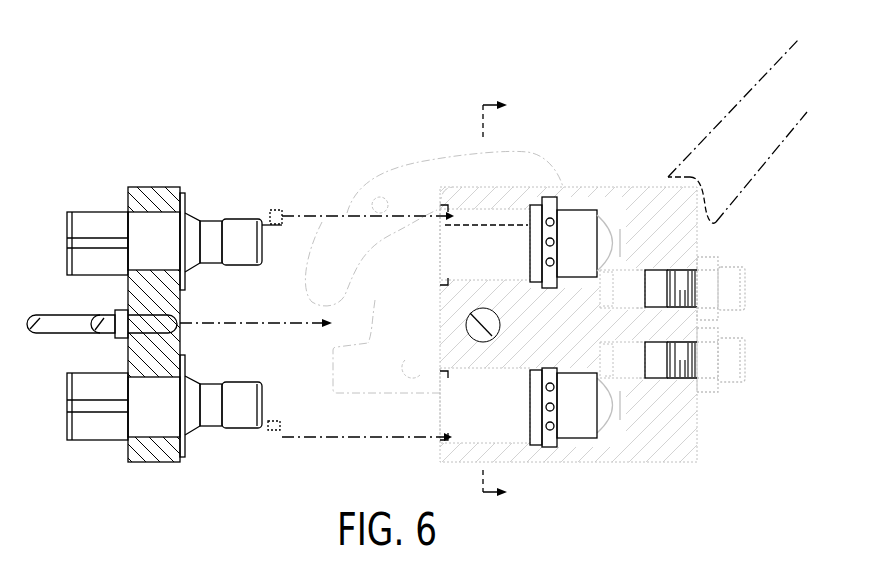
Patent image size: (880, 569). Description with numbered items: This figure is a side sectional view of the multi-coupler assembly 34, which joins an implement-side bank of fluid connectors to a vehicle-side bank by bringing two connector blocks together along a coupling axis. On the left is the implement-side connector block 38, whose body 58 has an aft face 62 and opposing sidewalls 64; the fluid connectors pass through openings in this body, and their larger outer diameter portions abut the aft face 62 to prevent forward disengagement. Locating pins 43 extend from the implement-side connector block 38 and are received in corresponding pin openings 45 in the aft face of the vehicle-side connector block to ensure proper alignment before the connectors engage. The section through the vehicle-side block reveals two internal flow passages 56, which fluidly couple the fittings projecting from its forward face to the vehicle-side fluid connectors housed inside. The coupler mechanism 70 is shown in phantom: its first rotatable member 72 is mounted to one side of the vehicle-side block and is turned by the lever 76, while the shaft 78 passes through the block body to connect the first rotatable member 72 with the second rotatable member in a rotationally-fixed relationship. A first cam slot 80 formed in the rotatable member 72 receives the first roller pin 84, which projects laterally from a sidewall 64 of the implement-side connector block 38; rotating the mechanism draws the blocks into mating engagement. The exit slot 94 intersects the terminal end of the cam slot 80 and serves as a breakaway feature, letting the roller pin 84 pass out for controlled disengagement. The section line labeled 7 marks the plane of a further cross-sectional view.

The section line 7- 7 is at (486, 303).
The multi-coupler assembly 34 is at (630, 172).
The implement-side connector block 38 is at (164, 182).
The locating pins 43 is at (268, 210).
The pin openings 45 is at (437, 211).
The internal flow passages 56 is at (587, 360).
The body 58 is at (143, 187).
The aft face 62 is at (128, 200).
The sidewalls 64 is at (186, 197).
The coupler mechanism 70 is at (356, 172).
The first rotatable member 72 is at (405, 180).
The lever 76 is at (740, 180).
The shaft 78 is at (466, 325).
The first cam slot 80 is at (405, 226).
The first roller pin 84 is at (126, 350).
The exit slot 94 is at (345, 336).